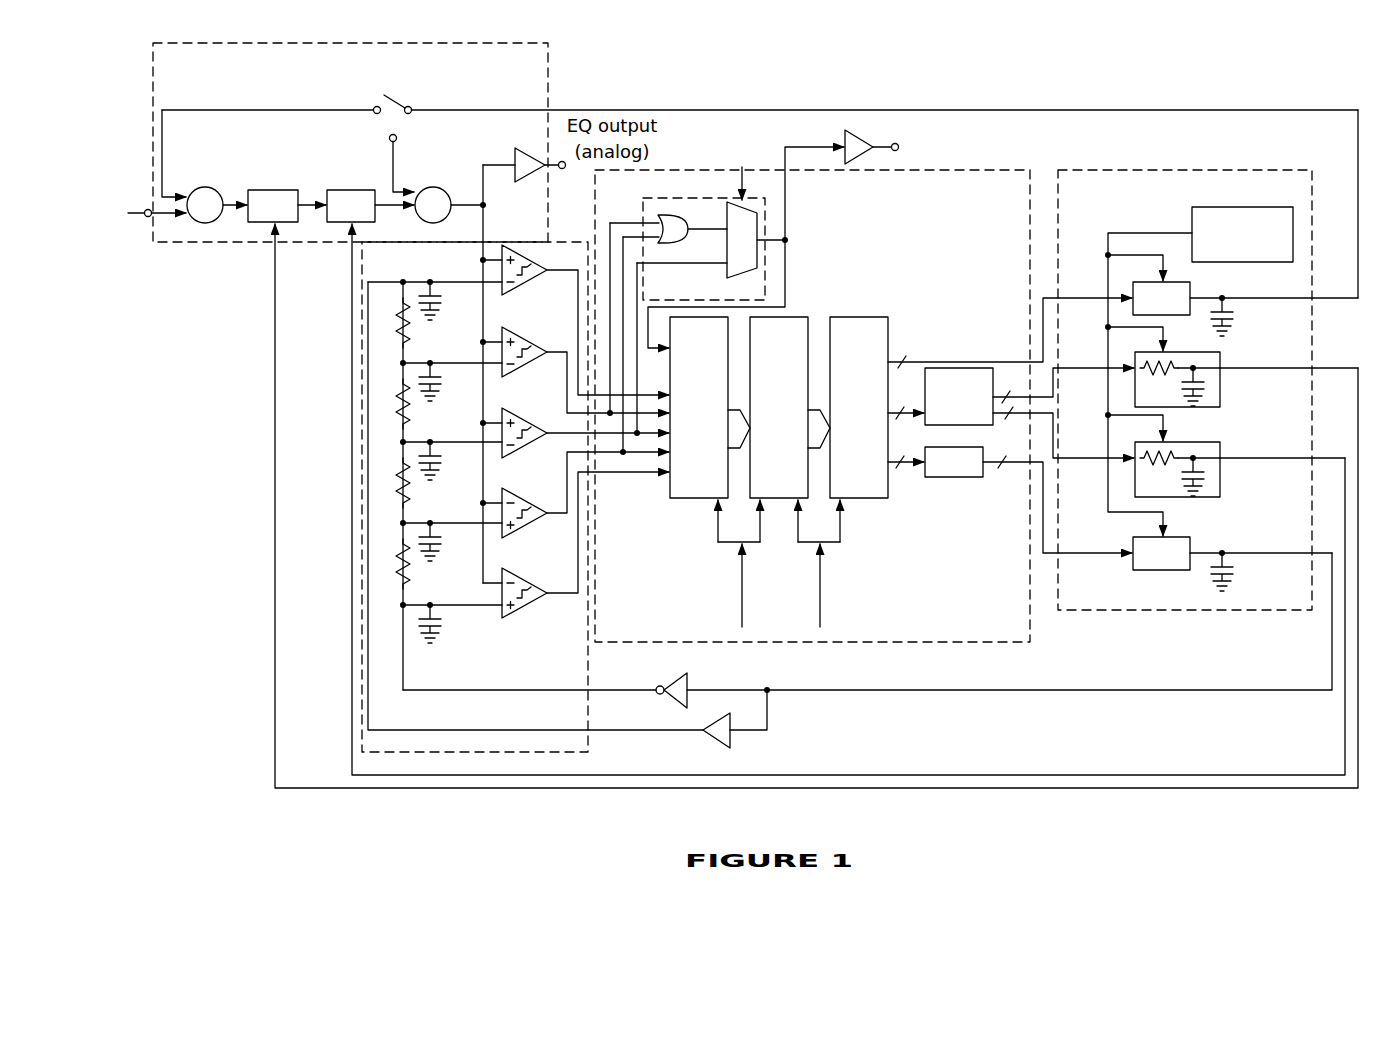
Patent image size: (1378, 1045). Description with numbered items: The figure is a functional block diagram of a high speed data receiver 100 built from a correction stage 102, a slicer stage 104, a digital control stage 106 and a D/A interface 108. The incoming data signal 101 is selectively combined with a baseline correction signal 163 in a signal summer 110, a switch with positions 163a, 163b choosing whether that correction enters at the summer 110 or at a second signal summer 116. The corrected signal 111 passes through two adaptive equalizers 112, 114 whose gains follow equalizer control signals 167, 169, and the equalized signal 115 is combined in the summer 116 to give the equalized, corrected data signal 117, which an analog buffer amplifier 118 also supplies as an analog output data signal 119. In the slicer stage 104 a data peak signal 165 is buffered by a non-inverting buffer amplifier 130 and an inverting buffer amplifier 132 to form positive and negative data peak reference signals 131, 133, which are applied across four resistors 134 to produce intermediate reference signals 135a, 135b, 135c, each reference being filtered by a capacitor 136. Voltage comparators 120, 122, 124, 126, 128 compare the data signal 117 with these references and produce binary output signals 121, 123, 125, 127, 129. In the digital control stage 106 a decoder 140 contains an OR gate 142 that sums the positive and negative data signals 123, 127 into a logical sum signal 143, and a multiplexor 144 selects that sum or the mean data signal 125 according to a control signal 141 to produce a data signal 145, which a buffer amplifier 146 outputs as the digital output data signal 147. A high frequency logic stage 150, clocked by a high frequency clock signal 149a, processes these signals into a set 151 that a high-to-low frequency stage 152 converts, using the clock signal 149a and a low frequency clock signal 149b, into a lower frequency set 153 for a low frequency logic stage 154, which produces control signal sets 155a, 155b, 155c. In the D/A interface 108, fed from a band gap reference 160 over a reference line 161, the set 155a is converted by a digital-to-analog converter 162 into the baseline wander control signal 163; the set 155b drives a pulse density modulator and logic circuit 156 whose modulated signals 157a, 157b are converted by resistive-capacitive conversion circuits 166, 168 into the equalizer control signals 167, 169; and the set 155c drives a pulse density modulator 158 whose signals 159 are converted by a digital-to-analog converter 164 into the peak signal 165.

The data receiver 100 is at (360, 815).
The input data signal 101 is at (134, 222).
The correction stage 102 is at (550, 78).
The slicer stage 104 is at (590, 744).
The digital control stage 106 is at (1022, 168).
The digital-to-analog interface 108 is at (1148, 170).
The signal summer 110 is at (196, 190).
The corrected signal 111 is at (228, 201).
The adaptive equalizer 112 is at (276, 190).
The adaptive equalizer 114 is at (346, 190).
The equalized signal 115 is at (384, 208).
The signal summer 116 is at (436, 187).
The equalized, corrected data signal 117 is at (485, 228).
The analog buffer amplifier 118 is at (514, 158).
The analog output data signal 119 is at (562, 170).
The positive peak voltage comparator 120 is at (512, 293).
The binary output signal 121 is at (562, 276).
The positive level comparator 122 is at (512, 373).
The positive data signal 123 is at (556, 358).
The middle comparator 124 is at (512, 453).
The mean data signal 125 is at (572, 433).
The negative level comparator 126 is at (512, 528).
The negative data signal 127 is at (557, 518).
The negative peak voltage comparator 128 is at (514, 610).
The binary output signal 129 is at (574, 593).
The non-inverting buffer amplifier 130 is at (724, 742).
The positive data peak reference signal 131 is at (418, 730).
The inverting buffer amplifier 132 is at (678, 680).
The negative data peak reference signal 133 is at (448, 690).
The resistor 134 is at (409, 327).
The positive reference signal 135a is at (403, 363).
The middle reference signal 135b is at (403, 442).
The negative reference signal 135c is at (403, 523).
The capacitor 136 is at (443, 302).
The decoder 140 is at (668, 197).
The control signal 141 is at (752, 178).
The OR gate 142 is at (660, 214).
The logical sum signal 143 is at (697, 215).
The multiplexor 144 is at (738, 272).
The data signal 145 is at (772, 238).
The buffer amplifier 146 is at (856, 130).
The output digital data signal 147 is at (898, 142).
The high frequency clock signal 149a is at (742, 588).
The low frequency clock signal 149b is at (820, 588).
The high frequency logic stage 150 is at (670, 500).
The set of digital signals 151 is at (735, 455).
The high-to-low frequency stage 152 is at (795, 316).
The set of lower frequency digital signals 153 is at (817, 455).
The low frequency logic stage 154 is at (850, 316).
The baseline wander control signal set 155a is at (903, 356).
The equalization control signal set 155b is at (910, 400).
The peak control signal set 155c is at (900, 470).
The pulse density modulator and logic circuit 156 is at (975, 366).
The pulse density modulated control signal 157a is at (1058, 370).
The pulse density modulated control signal 157b is at (1058, 420).
The pulse density modulator 158 is at (962, 480).
The set of pulse density modulated signals 159 is at (1058, 475).
The band gap reference 160 is at (1255, 206).
The reference distribution line 161 is at (1122, 232).
The digital-to-analog converter 162 is at (1190, 292).
The baseline wander control signal 163 is at (1258, 300).
The BLW switch 163a is at (372, 105).
The BLW switch terminal 163b is at (390, 137).
The digital-to-analog converter 164 is at (1190, 545).
The analog peak signal 165 is at (1258, 558).
The resistive-capacitive digital-to-analog conversion circuit 166 is at (1222, 380).
The equalizer control signal 167 is at (1272, 372).
The resistive-capacitive digital-to-analog conversion circuit 168 is at (1222, 468).
The equalizer control signal 169 is at (1252, 455).